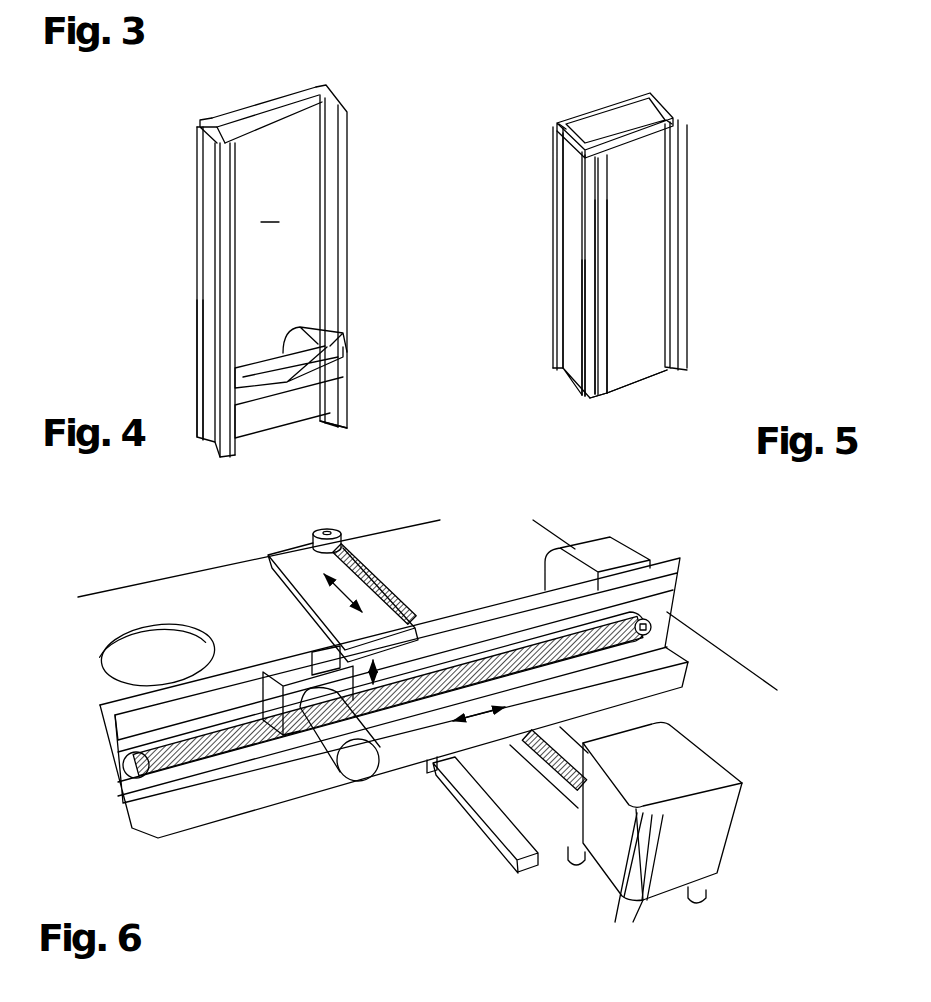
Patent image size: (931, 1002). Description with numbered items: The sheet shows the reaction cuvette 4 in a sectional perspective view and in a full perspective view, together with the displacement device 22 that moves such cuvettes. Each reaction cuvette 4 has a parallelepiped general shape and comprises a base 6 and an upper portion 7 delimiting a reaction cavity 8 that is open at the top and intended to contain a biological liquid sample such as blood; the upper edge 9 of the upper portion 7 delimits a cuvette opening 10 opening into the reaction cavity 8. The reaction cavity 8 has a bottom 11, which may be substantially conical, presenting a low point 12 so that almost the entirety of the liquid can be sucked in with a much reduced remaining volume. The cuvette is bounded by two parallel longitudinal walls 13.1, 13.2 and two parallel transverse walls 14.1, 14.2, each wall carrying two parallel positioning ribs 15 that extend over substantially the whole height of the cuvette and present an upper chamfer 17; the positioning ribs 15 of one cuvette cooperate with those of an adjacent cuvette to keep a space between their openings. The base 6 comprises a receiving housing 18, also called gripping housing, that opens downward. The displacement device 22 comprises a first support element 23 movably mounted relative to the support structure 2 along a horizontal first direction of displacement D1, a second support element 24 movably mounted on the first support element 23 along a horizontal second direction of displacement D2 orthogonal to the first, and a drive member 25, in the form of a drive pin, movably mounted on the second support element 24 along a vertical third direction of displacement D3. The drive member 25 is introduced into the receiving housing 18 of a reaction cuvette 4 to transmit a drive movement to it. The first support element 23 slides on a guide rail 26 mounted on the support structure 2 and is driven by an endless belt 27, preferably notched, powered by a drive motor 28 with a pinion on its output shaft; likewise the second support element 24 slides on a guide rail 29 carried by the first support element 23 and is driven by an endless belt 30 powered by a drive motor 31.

In FIG. 6, the support structure 2 is at (727, 683).
In FIG. 4, the reaction cuvette 4 is at (260, 265).
In FIG. 5, the reaction cuvette 4 is at (657, 201).
In FIG. 4, the base 6 is at (347, 405).
In FIG. 5, the base 6 is at (683, 343).
In FIG. 4, the upper portion 7 is at (215, 165).
In FIG. 5, the upper portion 7 is at (573, 187).
In FIG. 4, the reaction cavity 8 is at (270, 208).
In FIG. 5, the reaction cavity 8 is at (630, 116).
In FIG. 5, the upper edge 9 is at (649, 92).
In FIG. 4, the cuvette opening 10 is at (224, 123).
In FIG. 5, the cuvette opening 10 is at (574, 120).
In FIG. 4, the bottom 11 is at (330, 347).
In FIG. 4, the low point 12 is at (300, 327).
In FIG. 5, the longitudinal wall 13.1 is at (650, 222).
In FIG. 5, the longitudinal wall 13.2 is at (617, 117).
In FIG. 4, the transverse wall 14.1 is at (227, 228).
In FIG. 5, the transverse wall 14.1 is at (573, 262).
In FIG. 4, the transverse wall 14.2 is at (340, 125).
In FIG. 5, the positioning rib 15 is at (673, 272).
In FIG. 5, the upper chamfer 17 is at (556, 125).
In FIG. 4, the receiving housing 18 is at (269, 404).
In FIG. 6, the displacement device 22 is at (266, 827).
In FIG. 6, the first support element 23 is at (663, 606).
In FIG. 6, the second support element 24 is at (297, 722).
In FIG. 6, the drive member 25 is at (320, 650).
In FIG. 6, the guide rail 26 is at (497, 840).
In FIG. 6, the endless belt 27 is at (362, 572).
In FIG. 6, the drive motor 28 is at (716, 764).
In FIG. 6, the guide rail 29 is at (636, 592).
In FIG. 6, the endless belt 30 is at (177, 765).
In FIG. 6, the drive motor 31 is at (597, 557).
In FIG. 6, the first direction of displacement D1 is at (313, 600).
In FIG. 6, the second direction of displacement D2 is at (472, 720).
In FIG. 6, the third direction of displacement D3 is at (380, 658).